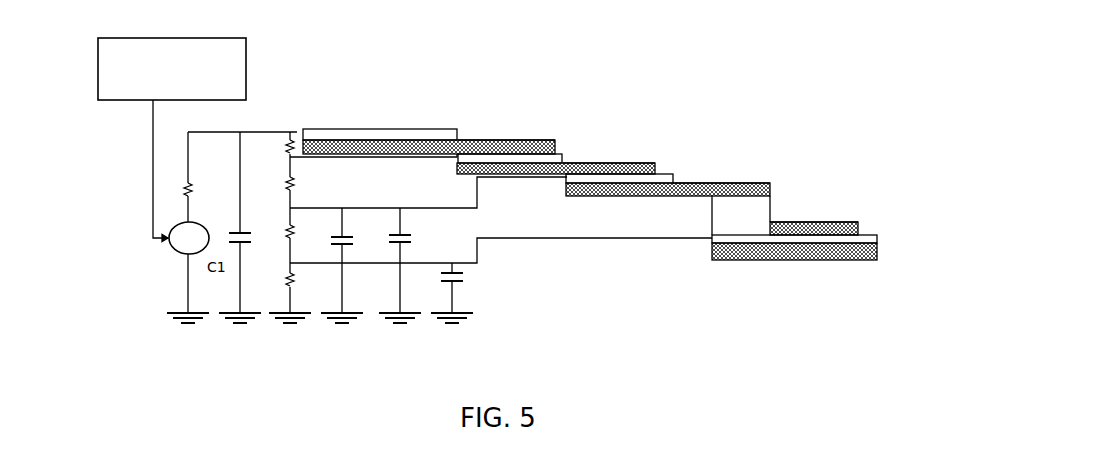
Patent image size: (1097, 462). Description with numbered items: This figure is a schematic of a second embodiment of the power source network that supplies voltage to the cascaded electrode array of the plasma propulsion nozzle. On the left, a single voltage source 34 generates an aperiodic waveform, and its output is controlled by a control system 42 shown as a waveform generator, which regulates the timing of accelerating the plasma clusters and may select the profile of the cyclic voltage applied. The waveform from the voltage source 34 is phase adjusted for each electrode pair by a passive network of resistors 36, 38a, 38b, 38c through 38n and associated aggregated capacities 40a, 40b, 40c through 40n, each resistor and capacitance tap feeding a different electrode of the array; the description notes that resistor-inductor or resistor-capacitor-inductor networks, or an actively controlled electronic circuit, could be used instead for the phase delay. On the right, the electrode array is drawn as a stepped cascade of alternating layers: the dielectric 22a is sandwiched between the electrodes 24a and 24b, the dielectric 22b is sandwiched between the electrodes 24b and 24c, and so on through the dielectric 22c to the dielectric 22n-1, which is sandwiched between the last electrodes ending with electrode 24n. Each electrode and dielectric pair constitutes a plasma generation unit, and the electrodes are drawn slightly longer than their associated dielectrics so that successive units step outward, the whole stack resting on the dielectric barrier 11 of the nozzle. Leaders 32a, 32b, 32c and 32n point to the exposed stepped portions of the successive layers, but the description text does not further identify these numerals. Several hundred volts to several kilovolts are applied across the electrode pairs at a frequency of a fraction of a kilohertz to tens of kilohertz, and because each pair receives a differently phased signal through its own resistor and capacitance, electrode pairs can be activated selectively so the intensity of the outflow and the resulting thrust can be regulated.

The control system 42 is at (246, 72).
The voltage source 34 is at (175, 250).
The resistor R0 36 is at (192, 186).
The resistor R1 38a is at (297, 106).
The resistor R2 38b is at (294, 181).
The resistor R3 38c is at (292, 229).
The resistor Rn 38n is at (292, 281).
The aggregated capacity C1 40a is at (247, 231).
The aggregated capacity C2 40b is at (347, 235).
The aggregated capacity C3 40c is at (405, 246).
The aggregated capacity Cn 40n is at (460, 284).
The electrode 24a is at (330, 128).
The dielectric 22a is at (465, 140).
The electrode 24b is at (555, 153).
The dielectric 22b is at (650, 162).
The electrode 24c is at (670, 182).
The electrode layer 22c is at (747, 182).
The dielectric 22n-1 is at (837, 221).
The electrode 24n is at (860, 235).
The dielectric barrier 11 is at (778, 245).
The exposed electrode contact region 32a is at (533, 128).
The exposed electrode contact region 32b is at (659, 148).
The exposed electrode contact region 32c is at (728, 170).
The exposed electrode contact region 32n is at (817, 206).